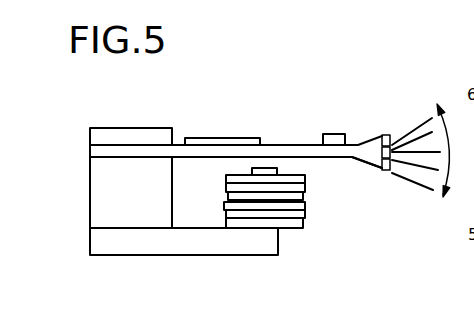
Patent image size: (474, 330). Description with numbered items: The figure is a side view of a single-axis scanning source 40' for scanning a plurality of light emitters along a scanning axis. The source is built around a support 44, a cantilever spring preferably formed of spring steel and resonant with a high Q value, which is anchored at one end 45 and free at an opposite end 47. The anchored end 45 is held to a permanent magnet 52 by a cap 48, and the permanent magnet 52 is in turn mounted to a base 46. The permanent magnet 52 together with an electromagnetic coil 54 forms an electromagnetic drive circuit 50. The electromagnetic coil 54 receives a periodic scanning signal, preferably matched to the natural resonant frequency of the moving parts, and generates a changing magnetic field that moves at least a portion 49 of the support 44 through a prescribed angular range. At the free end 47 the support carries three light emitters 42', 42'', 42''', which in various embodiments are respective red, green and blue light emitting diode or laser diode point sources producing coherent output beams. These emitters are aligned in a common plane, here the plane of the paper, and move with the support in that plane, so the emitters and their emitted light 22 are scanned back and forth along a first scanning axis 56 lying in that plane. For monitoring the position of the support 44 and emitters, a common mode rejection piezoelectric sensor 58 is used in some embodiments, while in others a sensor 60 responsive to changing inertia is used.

The single-axis scanning source 40' is at (196, 63).
The emitted light 22 is at (425, 80).
The light emitter 42' is at (396, 104).
The light emitter 42'' is at (374, 181).
The light emitter 42''' is at (405, 197).
The support 44 is at (288, 145).
The anchored end 45 is at (88, 150).
The base 46 is at (124, 255).
The free end 47 is at (322, 158).
The cap 48 is at (132, 127).
The portion of the support 49 is at (351, 80).
The electromagnetic drive circuit 50 is at (71, 181).
The permanent magnet 52 is at (175, 188).
The electromagnetic coil 54 is at (303, 200).
The first scanning axis 56 is at (444, 198).
The piezoelectric sensor 58 is at (216, 138).
The sensor 60 is at (326, 134).